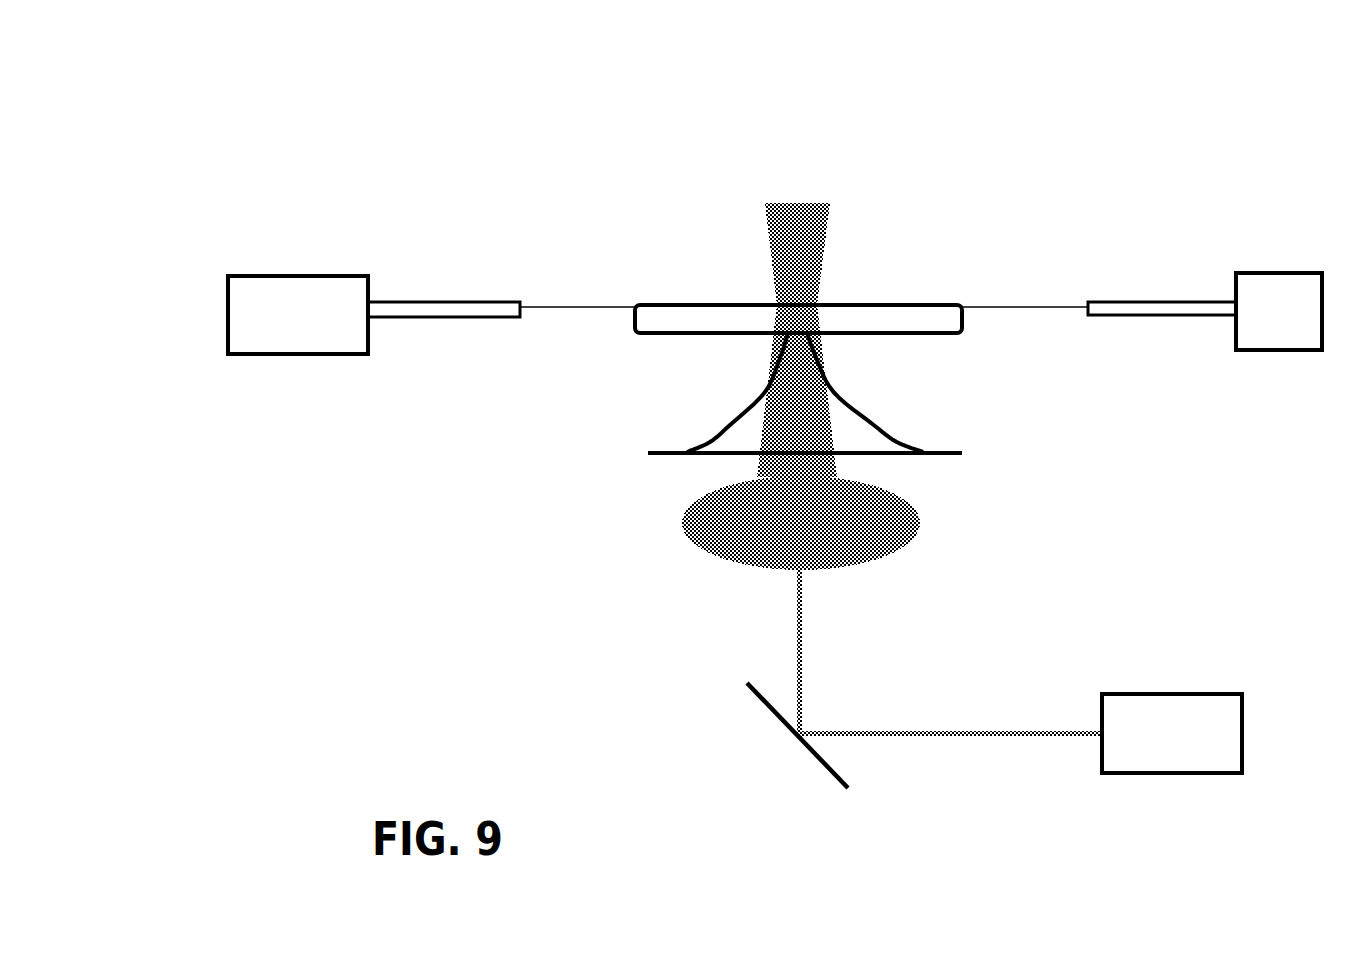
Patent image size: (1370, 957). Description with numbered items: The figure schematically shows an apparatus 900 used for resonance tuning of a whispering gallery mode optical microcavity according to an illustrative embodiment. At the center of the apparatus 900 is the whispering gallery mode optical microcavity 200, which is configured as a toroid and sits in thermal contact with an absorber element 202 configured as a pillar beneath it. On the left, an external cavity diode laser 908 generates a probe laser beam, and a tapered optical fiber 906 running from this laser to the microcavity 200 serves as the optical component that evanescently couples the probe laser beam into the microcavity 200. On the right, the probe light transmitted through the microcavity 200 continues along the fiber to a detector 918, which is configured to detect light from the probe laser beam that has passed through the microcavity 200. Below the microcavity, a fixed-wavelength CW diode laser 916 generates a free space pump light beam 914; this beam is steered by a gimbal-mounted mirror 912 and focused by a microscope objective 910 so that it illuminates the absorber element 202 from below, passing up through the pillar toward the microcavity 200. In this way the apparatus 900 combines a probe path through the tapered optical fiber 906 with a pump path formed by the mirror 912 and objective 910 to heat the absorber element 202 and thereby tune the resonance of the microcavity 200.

The apparatus 900 is at (585, 163).
The tapered optical fiber 906 is at (437, 302).
The external cavity diode laser 908 is at (322, 332).
The whispering gallery mode optical microcavity 200 is at (900, 303).
The free space pump light beam 914 is at (795, 225).
The absorber element 202 is at (845, 438).
The microscope objective 910 is at (822, 540).
The gimbal-mounted mirror 912 is at (760, 702).
The fixed-wavelength CW diode laser 916 is at (1193, 747).
The detector 918 is at (1300, 330).